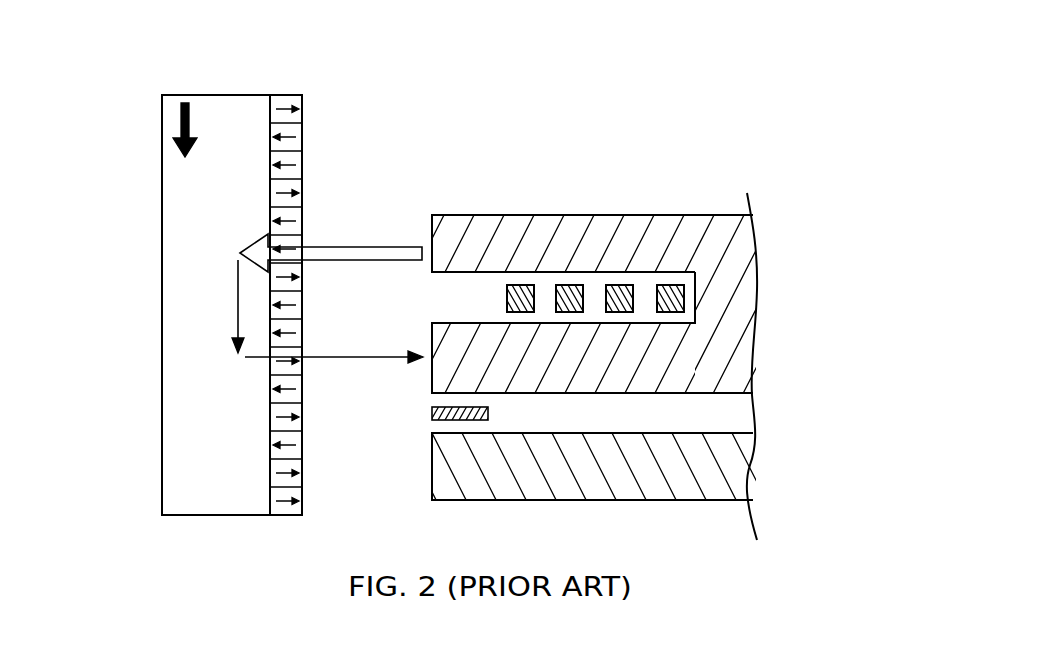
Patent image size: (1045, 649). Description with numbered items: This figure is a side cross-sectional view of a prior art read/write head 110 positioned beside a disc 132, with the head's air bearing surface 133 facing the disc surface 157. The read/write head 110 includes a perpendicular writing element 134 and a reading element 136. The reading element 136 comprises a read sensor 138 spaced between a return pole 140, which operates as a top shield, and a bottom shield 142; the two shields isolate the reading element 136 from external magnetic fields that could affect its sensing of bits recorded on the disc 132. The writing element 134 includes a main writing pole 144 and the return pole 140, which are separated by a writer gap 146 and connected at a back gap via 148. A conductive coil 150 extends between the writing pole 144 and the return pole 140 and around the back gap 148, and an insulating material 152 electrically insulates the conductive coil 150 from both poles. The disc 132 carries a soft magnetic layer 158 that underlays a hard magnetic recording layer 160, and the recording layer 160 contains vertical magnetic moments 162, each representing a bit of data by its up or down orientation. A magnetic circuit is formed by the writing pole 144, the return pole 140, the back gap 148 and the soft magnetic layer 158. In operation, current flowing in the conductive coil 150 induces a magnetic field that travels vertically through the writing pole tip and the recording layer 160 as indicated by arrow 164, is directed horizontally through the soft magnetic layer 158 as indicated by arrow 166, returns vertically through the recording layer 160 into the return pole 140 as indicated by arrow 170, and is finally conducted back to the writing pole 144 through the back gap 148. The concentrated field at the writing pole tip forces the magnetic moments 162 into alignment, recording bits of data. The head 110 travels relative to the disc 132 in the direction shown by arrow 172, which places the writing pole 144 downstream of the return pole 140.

The read/write head 110 is at (677, 125).
The disc 132 is at (165, 72).
The air bearing surface 133 is at (422, 220).
The perpendicular writing element 134 is at (842, 403).
The reading element 136 is at (780, 347).
The read sensor 138 is at (428, 412).
The return pole 140 is at (583, 383).
The bottom shield 142 is at (615, 494).
The writing pole 144 is at (600, 225).
The writer gap 146 is at (453, 296).
The back gap via 148 is at (740, 290).
The conductive coil 150 is at (620, 285).
The insulating material 152 is at (547, 283).
The disc surface 157 is at (303, 103).
The soft magnetic layer 158 is at (185, 505).
The recording layer 160 is at (292, 515).
The vertical magnetic moments 162 is at (275, 466).
The arrow 164 is at (398, 253).
The arrow 166 is at (238, 297).
The arrow 170 is at (392, 362).
The arrow 172 is at (185, 122).